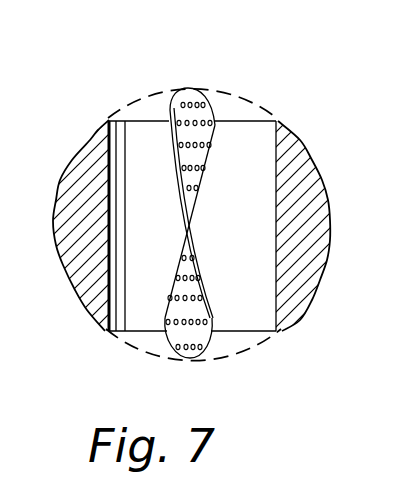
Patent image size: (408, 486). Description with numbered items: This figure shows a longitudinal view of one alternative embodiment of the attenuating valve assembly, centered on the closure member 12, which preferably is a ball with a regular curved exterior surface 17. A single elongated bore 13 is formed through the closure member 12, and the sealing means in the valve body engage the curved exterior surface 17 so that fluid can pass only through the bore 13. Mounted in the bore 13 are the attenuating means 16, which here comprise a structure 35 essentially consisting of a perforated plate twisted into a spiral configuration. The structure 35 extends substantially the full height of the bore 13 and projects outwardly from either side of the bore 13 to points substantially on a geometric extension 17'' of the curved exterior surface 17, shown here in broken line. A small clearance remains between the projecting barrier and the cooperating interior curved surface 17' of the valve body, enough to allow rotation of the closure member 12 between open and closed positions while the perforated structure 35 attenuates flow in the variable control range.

The closure member 12 is at (313, 190).
The bore 13 is at (246, 320).
The attenuating means 16 is at (217, 54).
The curved exterior surface 17 is at (325, 226).
The interior curved surface 17' is at (63, 227).
The geometric extension of the curved exterior surface 17'' is at (192, 260).
The structure 35 is at (202, 150).